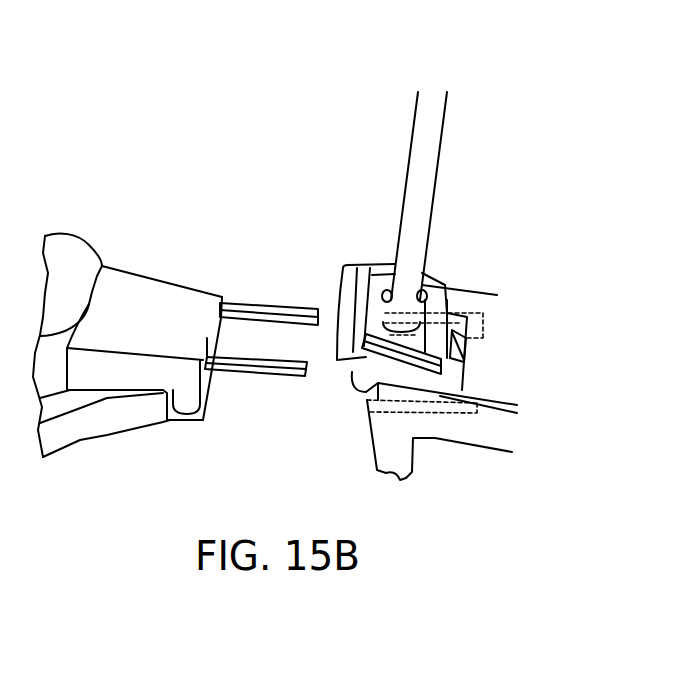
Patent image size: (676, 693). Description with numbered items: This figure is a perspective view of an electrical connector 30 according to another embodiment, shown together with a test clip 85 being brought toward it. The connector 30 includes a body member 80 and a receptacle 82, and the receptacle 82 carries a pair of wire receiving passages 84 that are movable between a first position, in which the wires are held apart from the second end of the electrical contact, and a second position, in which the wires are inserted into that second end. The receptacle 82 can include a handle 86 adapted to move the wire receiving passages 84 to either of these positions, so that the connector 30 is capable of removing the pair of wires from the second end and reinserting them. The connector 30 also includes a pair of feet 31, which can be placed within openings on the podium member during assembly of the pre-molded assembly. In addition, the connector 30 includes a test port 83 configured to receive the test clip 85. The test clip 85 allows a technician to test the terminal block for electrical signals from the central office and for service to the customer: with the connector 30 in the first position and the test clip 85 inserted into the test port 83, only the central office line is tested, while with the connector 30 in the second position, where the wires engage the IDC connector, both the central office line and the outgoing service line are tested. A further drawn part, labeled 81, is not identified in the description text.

The plug 30 is at (320, 362).
The receptacle assembly 31 is at (392, 492).
The housing 80 is at (511, 328).
The arm 81 is at (458, 380).
The top wall of clip 82 is at (367, 265).
The lower block 83 is at (416, 416).
The pivot pin 84 is at (436, 284).
The connector body 85 is at (105, 427).
The clip 86 is at (338, 292).